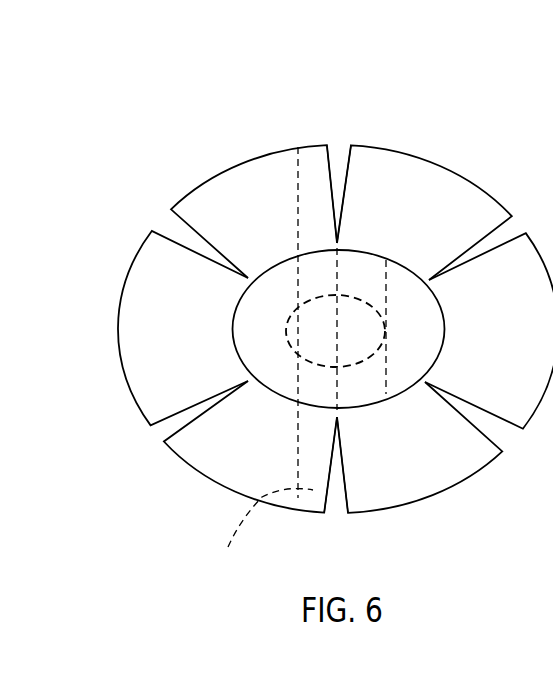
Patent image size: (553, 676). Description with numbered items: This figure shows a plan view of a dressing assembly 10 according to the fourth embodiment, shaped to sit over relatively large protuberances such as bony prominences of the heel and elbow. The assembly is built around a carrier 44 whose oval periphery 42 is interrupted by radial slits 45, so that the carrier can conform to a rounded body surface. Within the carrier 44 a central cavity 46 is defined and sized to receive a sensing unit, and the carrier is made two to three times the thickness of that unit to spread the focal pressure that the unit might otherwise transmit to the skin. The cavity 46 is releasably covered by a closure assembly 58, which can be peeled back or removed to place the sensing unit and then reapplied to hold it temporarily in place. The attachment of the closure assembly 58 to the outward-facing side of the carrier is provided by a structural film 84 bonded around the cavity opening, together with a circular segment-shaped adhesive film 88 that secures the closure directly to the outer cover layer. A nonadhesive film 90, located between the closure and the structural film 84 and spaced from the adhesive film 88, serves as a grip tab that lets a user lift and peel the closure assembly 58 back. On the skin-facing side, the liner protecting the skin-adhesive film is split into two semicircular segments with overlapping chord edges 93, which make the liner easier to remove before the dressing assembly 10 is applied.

The dressing assembly 10 is at (305, 305).
The periphery 42 is at (472, 475).
The carrier 44 is at (205, 453).
The radial slits 45 is at (335, 505).
The central cavity 46 is at (352, 300).
The closure assembly 58 is at (308, 250).
The structural film 84 is at (282, 300).
The adhesive film 88 is at (402, 347).
The nonadhesive film 90 is at (237, 335).
The chord edges 93 is at (260, 533).